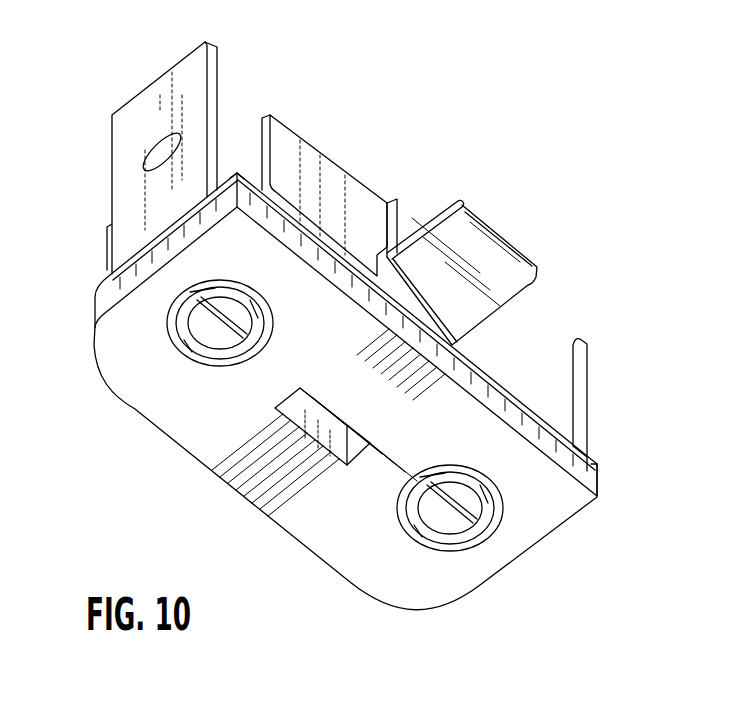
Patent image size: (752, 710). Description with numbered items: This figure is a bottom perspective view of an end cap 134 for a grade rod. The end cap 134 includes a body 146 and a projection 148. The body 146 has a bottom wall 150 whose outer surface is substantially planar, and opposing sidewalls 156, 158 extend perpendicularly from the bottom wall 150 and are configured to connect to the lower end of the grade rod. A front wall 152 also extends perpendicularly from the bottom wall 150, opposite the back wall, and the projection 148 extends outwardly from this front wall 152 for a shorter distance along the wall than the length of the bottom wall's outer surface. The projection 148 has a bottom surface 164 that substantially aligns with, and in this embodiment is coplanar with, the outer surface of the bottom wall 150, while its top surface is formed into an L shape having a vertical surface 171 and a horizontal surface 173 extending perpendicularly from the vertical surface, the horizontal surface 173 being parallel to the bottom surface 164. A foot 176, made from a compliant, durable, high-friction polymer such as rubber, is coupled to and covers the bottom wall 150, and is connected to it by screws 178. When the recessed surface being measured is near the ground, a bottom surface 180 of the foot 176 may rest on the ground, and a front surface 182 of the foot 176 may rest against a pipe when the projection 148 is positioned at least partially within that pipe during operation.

The end cap 134 is at (527, 127).
The body 146 is at (75, 93).
The projection 148 is at (530, 229).
The bottom wall 150 is at (234, 170).
The front wall 152 is at (331, 182).
The sidewall 156 is at (577, 342).
The sidewall 158 is at (133, 197).
The bottom surface 164 is at (492, 292).
The vertical surface 171 is at (403, 216).
The horizontal surface 173 is at (450, 200).
The foot 176 is at (118, 399).
The screws 178 is at (205, 333).
The bottom surface 180 is at (277, 497).
The front surface 182 is at (588, 478).